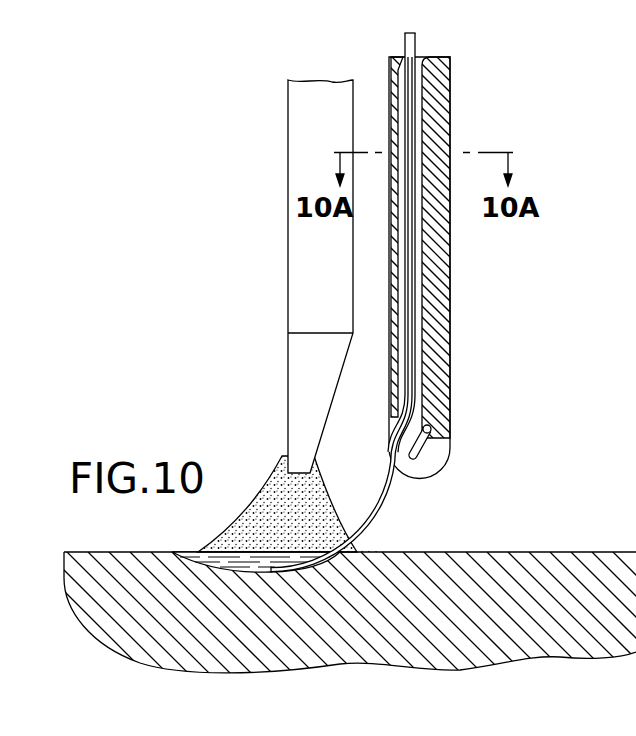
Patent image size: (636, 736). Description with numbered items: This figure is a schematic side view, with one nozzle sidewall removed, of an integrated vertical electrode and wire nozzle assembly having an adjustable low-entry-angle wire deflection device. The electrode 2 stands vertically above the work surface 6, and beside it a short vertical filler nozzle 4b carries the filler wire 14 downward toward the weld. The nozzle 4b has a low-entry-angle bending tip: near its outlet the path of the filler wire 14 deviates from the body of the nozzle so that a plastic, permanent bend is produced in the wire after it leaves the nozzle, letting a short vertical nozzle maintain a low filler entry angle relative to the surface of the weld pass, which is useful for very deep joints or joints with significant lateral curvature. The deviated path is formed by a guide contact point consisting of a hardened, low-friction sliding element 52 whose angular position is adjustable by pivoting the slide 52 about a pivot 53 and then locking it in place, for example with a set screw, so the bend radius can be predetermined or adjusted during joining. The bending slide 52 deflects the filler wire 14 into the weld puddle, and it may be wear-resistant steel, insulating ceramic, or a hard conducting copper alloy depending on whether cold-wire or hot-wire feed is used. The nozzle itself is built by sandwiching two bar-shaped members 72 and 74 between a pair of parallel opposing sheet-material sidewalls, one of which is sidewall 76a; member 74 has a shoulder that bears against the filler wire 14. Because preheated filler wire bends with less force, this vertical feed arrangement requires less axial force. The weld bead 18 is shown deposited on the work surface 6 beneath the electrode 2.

The electrode 2 is at (288, 212).
The vertical filler nozzle 4b is at (328, 243).
The work surface 6 is at (558, 552).
The filler wire 14 is at (389, 505).
The weld bead 18 is at (258, 500).
The sliding element 52 is at (436, 453).
The pivot 53 is at (438, 423).
The bar-shaped member 72 is at (390, 80).
The bar-shaped member 74 is at (447, 101).
The sidewall 76a is at (427, 57).